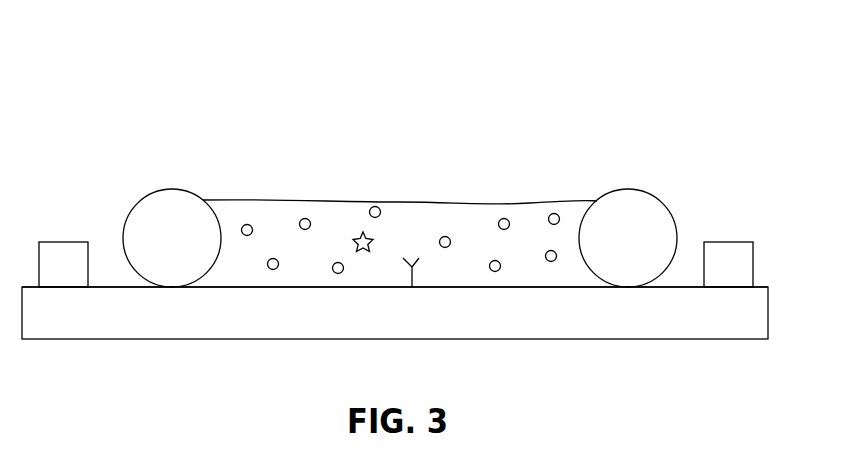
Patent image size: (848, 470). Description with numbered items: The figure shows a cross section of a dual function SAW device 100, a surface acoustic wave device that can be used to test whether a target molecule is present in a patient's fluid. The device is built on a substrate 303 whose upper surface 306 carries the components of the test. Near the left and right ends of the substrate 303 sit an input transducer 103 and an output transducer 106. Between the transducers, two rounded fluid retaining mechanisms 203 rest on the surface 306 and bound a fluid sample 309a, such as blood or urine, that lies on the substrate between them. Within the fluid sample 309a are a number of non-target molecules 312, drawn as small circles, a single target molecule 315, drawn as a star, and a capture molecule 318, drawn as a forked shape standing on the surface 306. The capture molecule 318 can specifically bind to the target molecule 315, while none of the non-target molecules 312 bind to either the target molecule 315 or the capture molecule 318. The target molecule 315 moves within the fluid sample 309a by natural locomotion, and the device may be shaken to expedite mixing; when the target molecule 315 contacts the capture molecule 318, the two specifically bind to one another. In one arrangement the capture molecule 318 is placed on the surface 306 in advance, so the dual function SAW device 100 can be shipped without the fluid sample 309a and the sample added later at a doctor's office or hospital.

The dual function SAW device 100 is at (109, 38).
The input transducer 103 is at (62, 241).
The output transducer 106 is at (730, 241).
The fluid retaining mechanism 203 is at (173, 188).
The substrate 303 is at (630, 339).
The surface 306 is at (106, 288).
The fluid sample 309a is at (268, 200).
The non-target molecules 312 is at (381, 212).
The target molecule 315 is at (375, 239).
The capture molecule 318 is at (413, 271).